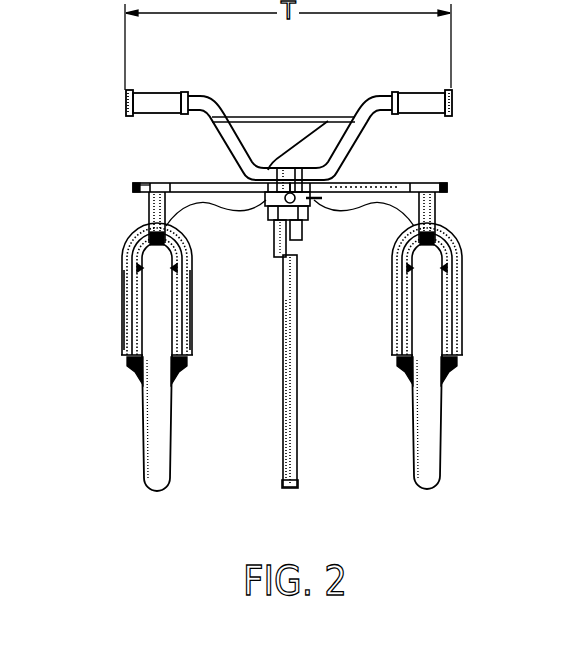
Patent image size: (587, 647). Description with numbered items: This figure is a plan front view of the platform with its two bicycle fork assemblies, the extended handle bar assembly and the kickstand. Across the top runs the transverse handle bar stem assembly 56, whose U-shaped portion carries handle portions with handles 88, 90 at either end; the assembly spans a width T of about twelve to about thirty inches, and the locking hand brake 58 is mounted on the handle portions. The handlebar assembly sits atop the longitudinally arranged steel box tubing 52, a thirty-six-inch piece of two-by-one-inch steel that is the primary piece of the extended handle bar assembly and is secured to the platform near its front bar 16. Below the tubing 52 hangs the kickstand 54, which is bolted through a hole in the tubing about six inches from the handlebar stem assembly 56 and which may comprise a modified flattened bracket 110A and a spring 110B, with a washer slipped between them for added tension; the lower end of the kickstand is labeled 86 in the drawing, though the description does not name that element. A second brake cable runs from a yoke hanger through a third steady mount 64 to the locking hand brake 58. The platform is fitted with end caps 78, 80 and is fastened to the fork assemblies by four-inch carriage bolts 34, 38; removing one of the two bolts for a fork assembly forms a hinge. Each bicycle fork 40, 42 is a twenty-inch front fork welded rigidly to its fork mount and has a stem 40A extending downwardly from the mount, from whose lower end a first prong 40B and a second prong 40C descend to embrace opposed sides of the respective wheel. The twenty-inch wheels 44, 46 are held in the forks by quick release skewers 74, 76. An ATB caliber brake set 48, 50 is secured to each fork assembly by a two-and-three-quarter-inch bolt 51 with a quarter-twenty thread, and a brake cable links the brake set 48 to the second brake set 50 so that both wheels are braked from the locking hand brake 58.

The front bar 16 is at (384, 182).
The carriage bolt 34 is at (134, 188).
The carriage bolt 38 is at (450, 191).
The bicycle fork 40 is at (122, 292).
The stem 40A is at (140, 185).
The first prong 40B is at (122, 327).
The second prong 40C is at (192, 354).
The bicycle fork 42 is at (456, 288).
The wheel 44 is at (146, 436).
The wheel 46 is at (433, 452).
The brake set 48 is at (452, 244).
The brake set 50 is at (125, 250).
The bolt 51 is at (148, 234).
The steel box tubing 52 is at (264, 224).
The kickstand 54 is at (282, 285).
The transverse handle bar stem assembly 56 is at (212, 150).
The locking hand brake 58 is at (388, 100).
The third steady mount 64 is at (300, 229).
The quick release skewer 74 is at (128, 368).
The quick release skewer 76 is at (458, 372).
The end cap 78 is at (134, 185).
The end cap 80 is at (445, 183).
The kickstand foot 86 is at (293, 486).
The handle 88 is at (172, 93).
The handle 90 is at (430, 92).
The modified flattened bracket 110A is at (278, 248).
The spring 110B is at (297, 246).